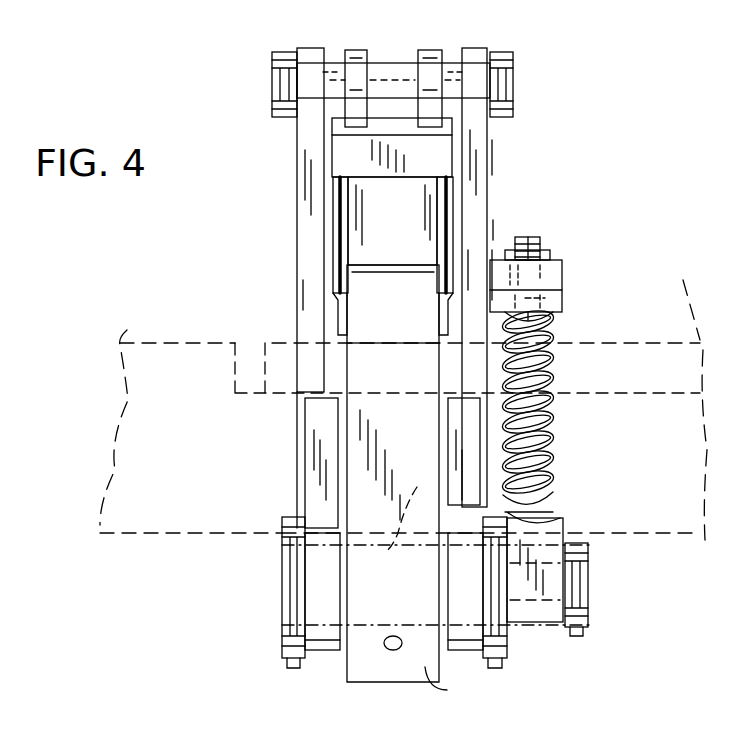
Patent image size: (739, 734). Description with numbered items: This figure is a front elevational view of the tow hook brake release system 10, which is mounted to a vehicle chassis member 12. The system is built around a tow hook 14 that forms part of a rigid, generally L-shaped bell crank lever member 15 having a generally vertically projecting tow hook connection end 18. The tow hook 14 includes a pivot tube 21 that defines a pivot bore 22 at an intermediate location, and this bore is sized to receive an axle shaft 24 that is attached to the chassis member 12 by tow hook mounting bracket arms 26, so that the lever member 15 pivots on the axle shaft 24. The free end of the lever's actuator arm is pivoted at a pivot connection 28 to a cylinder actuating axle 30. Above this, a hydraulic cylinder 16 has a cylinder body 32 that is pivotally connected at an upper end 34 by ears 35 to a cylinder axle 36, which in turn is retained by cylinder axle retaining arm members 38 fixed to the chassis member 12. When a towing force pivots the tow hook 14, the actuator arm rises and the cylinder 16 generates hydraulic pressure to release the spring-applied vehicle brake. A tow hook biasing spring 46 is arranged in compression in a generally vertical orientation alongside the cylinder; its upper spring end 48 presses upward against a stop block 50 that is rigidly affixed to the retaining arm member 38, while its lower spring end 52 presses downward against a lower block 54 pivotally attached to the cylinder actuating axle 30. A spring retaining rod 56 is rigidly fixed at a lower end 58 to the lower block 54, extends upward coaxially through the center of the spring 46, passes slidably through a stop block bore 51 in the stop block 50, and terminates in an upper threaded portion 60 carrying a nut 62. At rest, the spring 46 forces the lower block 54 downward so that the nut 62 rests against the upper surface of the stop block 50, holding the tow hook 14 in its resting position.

The tow hook brake release system 10 is at (282, 312).
The vehicle chassis member 12 is at (403, 400).
The tow hook 14 is at (397, 285).
The bell crank lever member 15 is at (340, 451).
The hydraulic cylinder 16 is at (334, 238).
The tow hook connection end 18 is at (380, 313).
The pivot tube 21 is at (408, 506).
The pivot bore 22 is at (303, 612).
The axle shaft 24 is at (368, 630).
The tow hook mounting bracket arms 26 is at (295, 660).
The pivot connection 28 is at (447, 690).
The cylinder actuating axle 30 is at (542, 603).
The cylinder body 32 is at (343, 208).
The upper end 34 is at (340, 118).
The ears 35 is at (360, 52).
The cylinder axle 36 is at (407, 63).
The cylinder axle retaining arm members 38 is at (295, 148).
The tow hook biasing spring 46 is at (552, 422).
The upper spring end 48 is at (547, 327).
The stop block 50 is at (563, 285).
The stop block bore 51 is at (565, 275).
The lower spring end 52 is at (558, 488).
The lower block 54 is at (567, 535).
The spring retaining rod 56 is at (538, 232).
The lower end 58 is at (560, 517).
The upper threaded portion 60 is at (508, 245).
The nut 62 is at (553, 252).